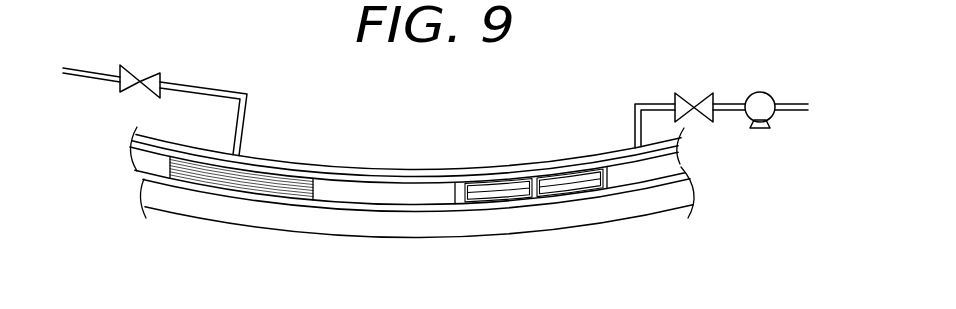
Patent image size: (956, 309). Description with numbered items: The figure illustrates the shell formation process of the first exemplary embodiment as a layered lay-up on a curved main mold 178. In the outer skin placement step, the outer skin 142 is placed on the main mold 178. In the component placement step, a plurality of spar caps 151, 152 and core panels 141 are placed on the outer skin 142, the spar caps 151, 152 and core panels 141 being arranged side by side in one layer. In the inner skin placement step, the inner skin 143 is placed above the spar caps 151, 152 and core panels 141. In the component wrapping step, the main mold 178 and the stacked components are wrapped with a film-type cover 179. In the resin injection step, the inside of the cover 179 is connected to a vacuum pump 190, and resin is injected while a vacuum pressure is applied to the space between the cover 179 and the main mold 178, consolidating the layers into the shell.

The core panels 141 is at (357, 195).
The outer skin 142 is at (402, 208).
The inner skin 143 is at (425, 177).
The spar cap 151 is at (500, 192).
The spar cap 152 is at (237, 187).
The main mold 178 is at (582, 212).
The film-type cover 179 is at (560, 168).
The vacuum pump 190 is at (766, 91).